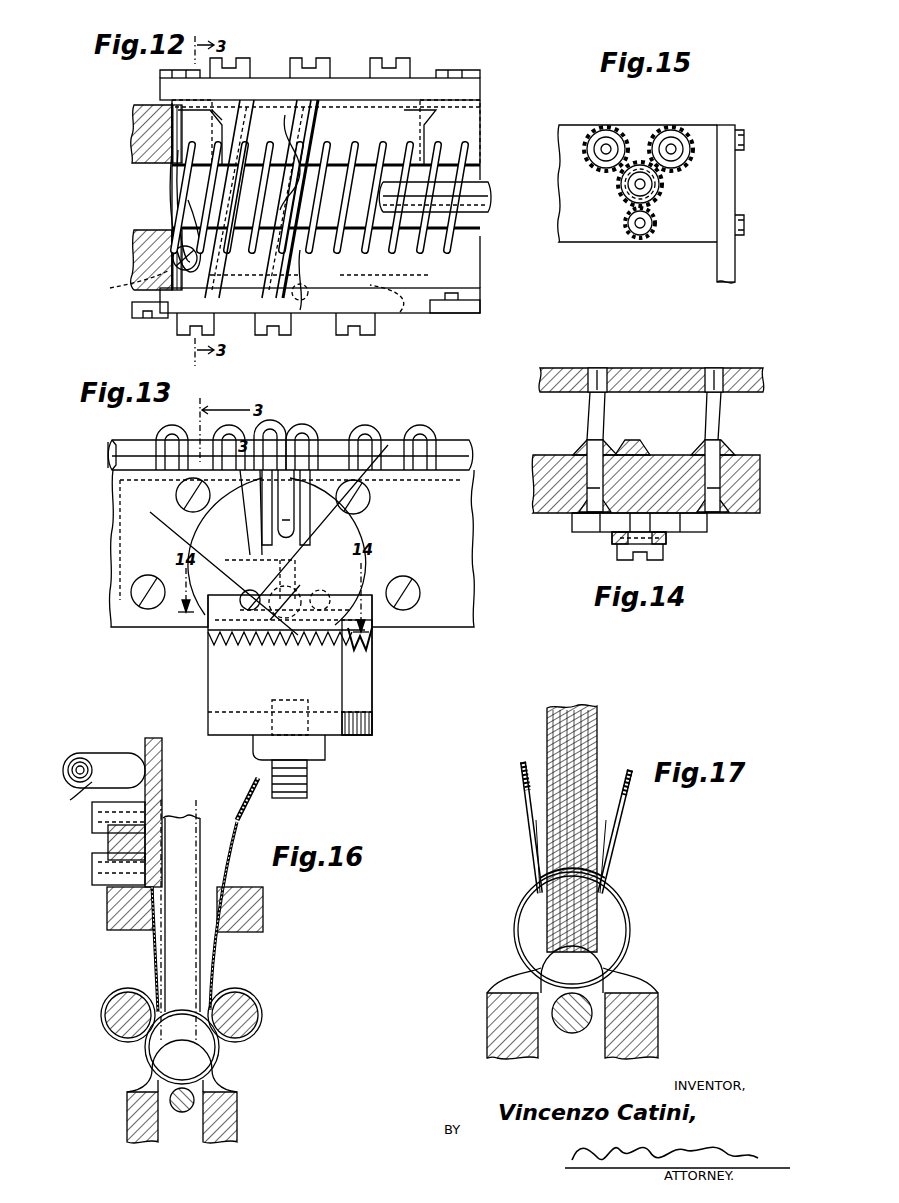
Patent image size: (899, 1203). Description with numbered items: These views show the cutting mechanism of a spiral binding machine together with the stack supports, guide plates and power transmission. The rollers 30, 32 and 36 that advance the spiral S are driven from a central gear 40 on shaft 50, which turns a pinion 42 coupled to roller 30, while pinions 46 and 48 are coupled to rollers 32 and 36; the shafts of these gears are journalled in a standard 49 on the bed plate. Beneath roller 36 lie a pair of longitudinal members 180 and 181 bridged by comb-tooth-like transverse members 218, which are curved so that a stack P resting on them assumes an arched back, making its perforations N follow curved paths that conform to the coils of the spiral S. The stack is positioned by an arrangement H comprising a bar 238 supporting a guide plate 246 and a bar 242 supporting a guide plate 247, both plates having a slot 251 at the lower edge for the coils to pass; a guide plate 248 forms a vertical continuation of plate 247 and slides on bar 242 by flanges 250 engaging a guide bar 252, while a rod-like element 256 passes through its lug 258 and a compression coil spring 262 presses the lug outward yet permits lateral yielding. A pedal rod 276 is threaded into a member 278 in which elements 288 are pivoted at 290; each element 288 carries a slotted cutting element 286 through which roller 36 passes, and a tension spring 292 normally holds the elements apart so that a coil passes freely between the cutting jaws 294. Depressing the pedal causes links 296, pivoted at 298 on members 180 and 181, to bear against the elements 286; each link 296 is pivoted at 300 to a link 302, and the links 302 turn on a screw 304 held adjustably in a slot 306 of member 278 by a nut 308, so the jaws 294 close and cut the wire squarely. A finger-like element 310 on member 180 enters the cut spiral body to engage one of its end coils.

In FIG. 16, the roller 30 is at (248, 1000).
In FIG. 16, the roller 32 is at (112, 1006).
In FIG. 12, the roller 36 is at (478, 214).
In FIG. 13, the roller 36 is at (450, 442).
In FIG. 16, the roller 36 is at (180, 1112).
In FIG. 17, the roller 36 is at (566, 1034).
In FIG. 15, the central gear 40 is at (652, 192).
In FIG. 15, the pinion 42 is at (672, 128).
In FIG. 15, the pinion 46 is at (602, 128).
In FIG. 15, the pinion 48 is at (640, 238).
In FIG. 15, the standard 49 is at (580, 232).
In FIG. 15, the shaft 50 is at (638, 186).
In FIG. 12, the longitudinally extending member 180 is at (132, 258).
In FIG. 14, the longitudinally extending member 180 is at (545, 472).
In FIG. 13, the longitudinally extending member 180 is at (445, 620).
In FIG. 16, the longitudinally extending member 180 is at (130, 1117).
In FIG. 17, the longitudinally extending member 180 is at (495, 1010).
In FIG. 12, the longitudinally extending member 181 is at (132, 130).
In FIG. 14, the longitudinally extending member 181 is at (646, 374).
In FIG. 16, the longitudinally extending member 181 is at (225, 1118).
In FIG. 17, the longitudinally extending member 181 is at (640, 1023).
In FIG. 12, the transversely extending member 218 is at (420, 150).
In FIG. 13, the transversely extending member 218 is at (362, 446).
In FIG. 16, the transversely extending member 218 is at (145, 1080).
In FIG. 17, the transversely extending member 218 is at (545, 960).
In FIG. 16, the bar 238 is at (263, 900).
In FIG. 16, the bar 242 is at (112, 904).
In FIG. 16, the guide plate 246 is at (243, 820).
In FIG. 17, the guide plate 246 is at (627, 790).
In FIG. 16, the guide plate 247 is at (152, 944).
In FIG. 17, the guide plate 247 is at (523, 790).
In FIG. 16, the guide plate 248 is at (150, 748).
In FIG. 16, the flanges 250 is at (96, 818).
In FIG. 16, the slot 251 is at (160, 972).
In FIG. 17, the slot 251 is at (532, 834).
In FIG. 16, the guide bar 252 is at (112, 843).
In FIG. 16, the rod-like element 256 is at (70, 770).
In FIG. 16, the lug 258 is at (106, 758).
In FIG. 16, the compression coil spring 262 is at (59, 796).
In FIG. 13, the rod 276 is at (310, 778).
In FIG. 14, the member 278 is at (722, 406).
In FIG. 13, the member 278 is at (360, 722).
In FIG. 12, the cutting element 286 is at (300, 140).
In FIG. 13, the cutting element 286 is at (288, 436).
In FIG. 14, the element 288 is at (632, 440).
In FIG. 12, the pivot 290 is at (418, 330).
In FIG. 14, the pivot 290 is at (720, 462).
In FIG. 13, the tension spring 292 is at (368, 648).
In FIG. 12, the cutting jaws 294 is at (306, 312).
In FIG. 13, the cutting jaws 294 is at (282, 455).
In FIG. 13, the link 296 is at (150, 528).
In FIG. 12, the pivot 298 is at (160, 86).
In FIG. 13, the pivot 298 is at (130, 590).
In FIG. 12, the pivot 300 is at (236, 58).
In FIG. 13, the pivot 300 is at (176, 493).
In FIG. 14, the link 302 is at (612, 538).
In FIG. 13, the link 302 is at (210, 535).
In FIG. 12, the screw 304 is at (300, 76).
In FIG. 14, the screw 304 is at (650, 560).
In FIG. 13, the screw 304 is at (240, 640).
In FIG. 14, the slot 306 is at (667, 538).
In FIG. 13, the slot 306 is at (305, 646).
In FIG. 14, the nut 308 is at (700, 498).
In FIG. 12, the finger-like element 310 is at (172, 184).
In FIG. 13, the finger-like element 310 is at (236, 448).
In FIG. 12, the spiral S is at (470, 175).
In FIG. 16, the spiral S is at (219, 1050).
In FIG. 17, the spiral S is at (626, 902).
In FIG. 16, the stack positioning arrangement H is at (224, 803).
In FIG. 17, the stack P is at (597, 716).
In FIG. 17, the perforations N is at (590, 874).